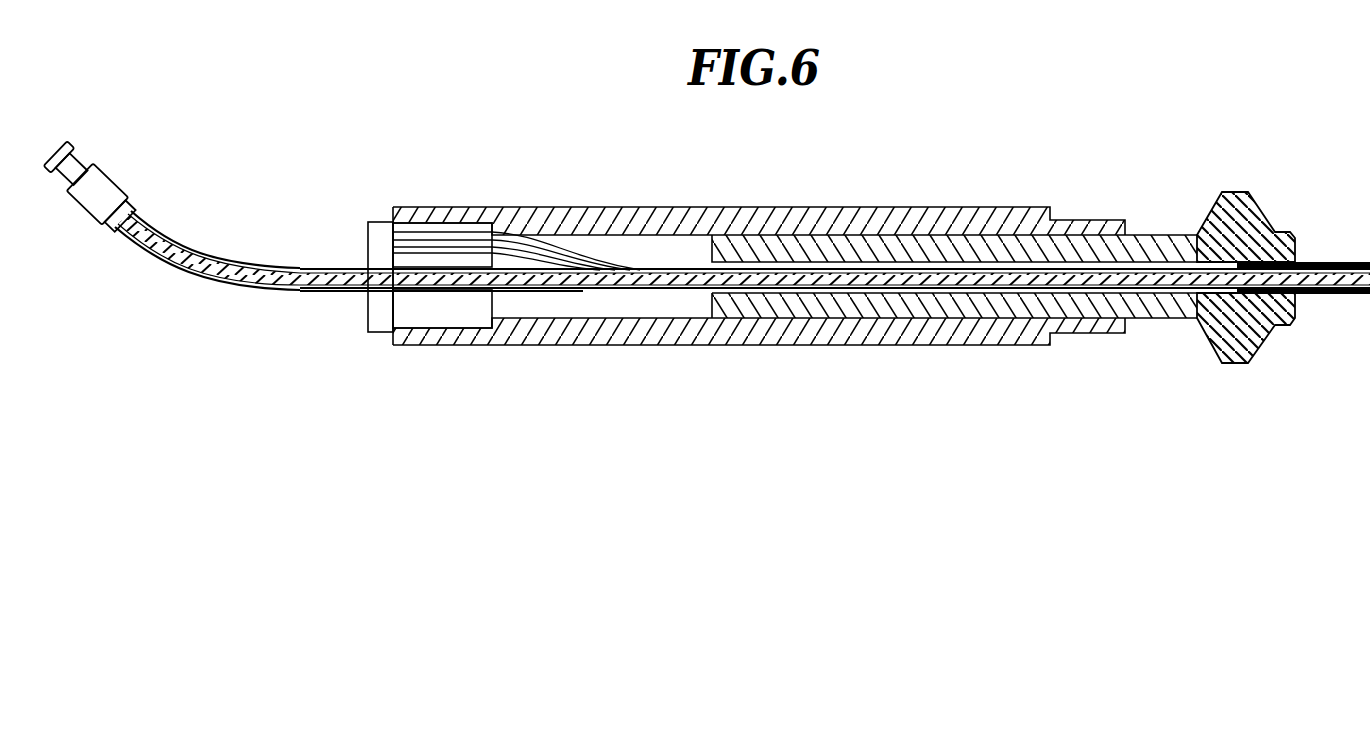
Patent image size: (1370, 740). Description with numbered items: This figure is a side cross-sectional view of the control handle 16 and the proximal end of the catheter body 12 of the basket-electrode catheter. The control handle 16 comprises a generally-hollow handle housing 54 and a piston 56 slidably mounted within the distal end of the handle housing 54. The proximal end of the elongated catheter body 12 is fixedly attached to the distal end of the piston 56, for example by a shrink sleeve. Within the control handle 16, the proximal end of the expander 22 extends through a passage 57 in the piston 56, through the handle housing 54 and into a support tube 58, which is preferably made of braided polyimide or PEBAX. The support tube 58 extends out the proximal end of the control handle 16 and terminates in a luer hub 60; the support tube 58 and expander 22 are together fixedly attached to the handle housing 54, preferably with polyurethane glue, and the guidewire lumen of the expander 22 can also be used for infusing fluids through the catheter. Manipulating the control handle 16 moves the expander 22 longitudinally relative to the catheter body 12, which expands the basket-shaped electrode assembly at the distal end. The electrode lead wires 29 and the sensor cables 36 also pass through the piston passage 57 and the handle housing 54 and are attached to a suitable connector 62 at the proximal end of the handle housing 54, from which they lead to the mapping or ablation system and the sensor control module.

The catheter body 12 is at (1337, 295).
The control handle 16 is at (868, 380).
The expander 22 is at (653, 283).
The electrode lead wire 29 is at (420, 232).
The sensor cable 36 is at (452, 245).
The handle housing 54 is at (507, 318).
The piston 56 is at (795, 293).
The passage 57 is at (980, 293).
The support tube 58 is at (197, 275).
The luer hub 60 is at (103, 172).
The connector 62 is at (382, 313).